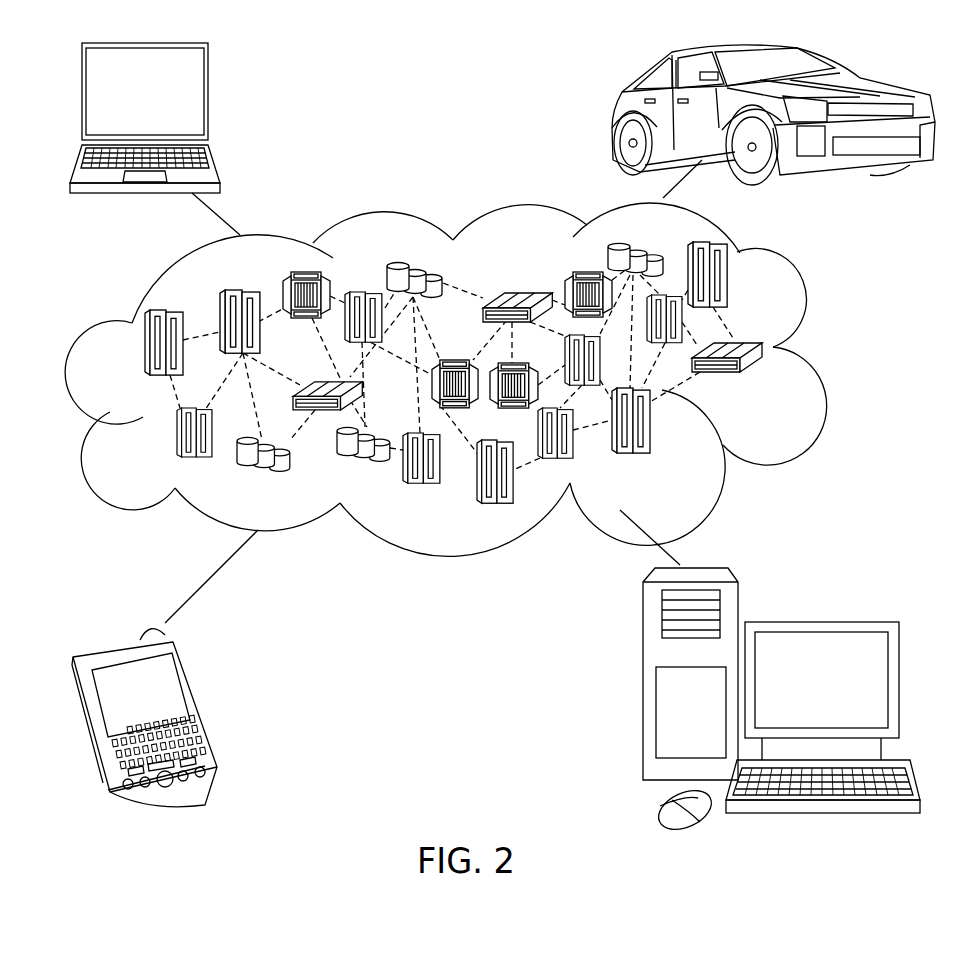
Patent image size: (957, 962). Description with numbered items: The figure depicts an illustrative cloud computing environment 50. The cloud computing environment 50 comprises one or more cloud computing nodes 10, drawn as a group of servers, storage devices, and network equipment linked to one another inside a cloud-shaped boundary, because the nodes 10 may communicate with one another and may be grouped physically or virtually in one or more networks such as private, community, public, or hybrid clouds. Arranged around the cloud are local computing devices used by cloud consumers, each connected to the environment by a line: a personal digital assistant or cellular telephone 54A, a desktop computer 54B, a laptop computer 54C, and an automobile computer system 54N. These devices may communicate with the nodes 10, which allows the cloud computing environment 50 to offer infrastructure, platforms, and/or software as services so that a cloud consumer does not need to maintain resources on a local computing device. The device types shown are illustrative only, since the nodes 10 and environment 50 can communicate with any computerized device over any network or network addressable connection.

The cloud computing node 10 is at (502, 372).
The cloud computing environment 50 is at (818, 351).
The personal digital assistant (PDA) or cellular telephone 54A is at (200, 707).
The desktop computer 54B is at (820, 621).
The laptop computer 54C is at (208, 98).
The automobile computer system 54N is at (612, 113).